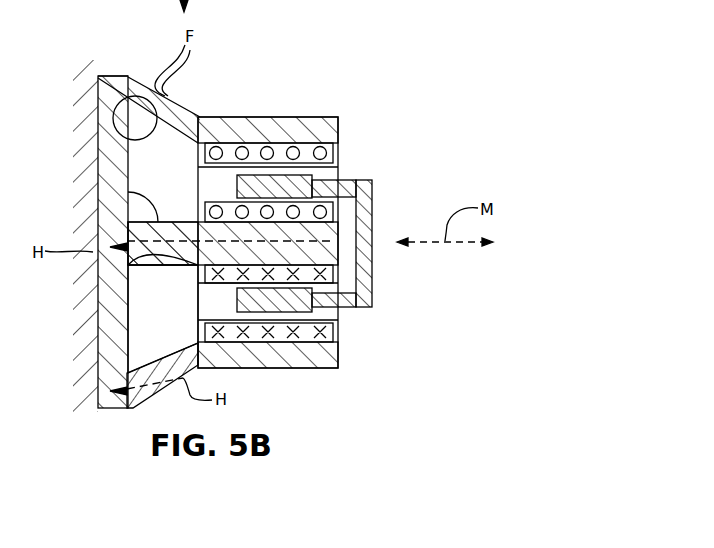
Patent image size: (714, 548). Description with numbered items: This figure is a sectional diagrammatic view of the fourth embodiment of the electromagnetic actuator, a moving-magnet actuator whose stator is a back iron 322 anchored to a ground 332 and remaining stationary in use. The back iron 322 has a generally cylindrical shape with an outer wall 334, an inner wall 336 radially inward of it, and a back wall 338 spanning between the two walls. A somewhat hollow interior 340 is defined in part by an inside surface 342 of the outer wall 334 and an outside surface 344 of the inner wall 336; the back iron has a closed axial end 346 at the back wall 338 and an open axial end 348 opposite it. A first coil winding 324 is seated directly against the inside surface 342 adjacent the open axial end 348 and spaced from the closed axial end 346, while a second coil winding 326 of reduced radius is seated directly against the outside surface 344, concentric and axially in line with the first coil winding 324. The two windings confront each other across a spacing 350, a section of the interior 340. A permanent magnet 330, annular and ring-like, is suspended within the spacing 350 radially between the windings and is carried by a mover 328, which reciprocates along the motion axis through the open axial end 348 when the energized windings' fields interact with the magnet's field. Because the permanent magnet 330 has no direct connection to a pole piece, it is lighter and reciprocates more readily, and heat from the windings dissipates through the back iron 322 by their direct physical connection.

The back iron 322 is at (113, 70).
The first coil winding 324 is at (344, 152).
The second coil winding 326 is at (344, 210).
The mover 328 is at (383, 288).
The permanent magnet 330 is at (290, 312).
The ground 332 is at (74, 341).
The outer wall 334 is at (252, 117).
The inner wall 336 is at (218, 262).
The back wall 338 is at (100, 283).
The interior 340 is at (182, 322).
The inside surface 342 is at (115, 124).
The outside surface 344 is at (124, 207).
The closed axial end 346 is at (118, 362).
The open axial end 348 is at (320, 117).
The spacing 350 is at (237, 194).